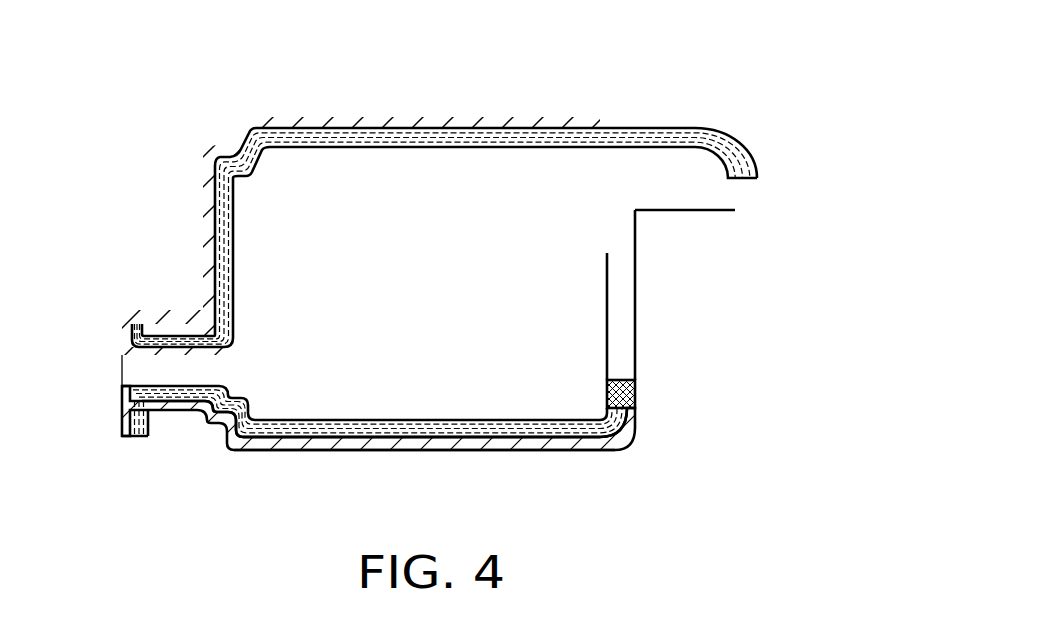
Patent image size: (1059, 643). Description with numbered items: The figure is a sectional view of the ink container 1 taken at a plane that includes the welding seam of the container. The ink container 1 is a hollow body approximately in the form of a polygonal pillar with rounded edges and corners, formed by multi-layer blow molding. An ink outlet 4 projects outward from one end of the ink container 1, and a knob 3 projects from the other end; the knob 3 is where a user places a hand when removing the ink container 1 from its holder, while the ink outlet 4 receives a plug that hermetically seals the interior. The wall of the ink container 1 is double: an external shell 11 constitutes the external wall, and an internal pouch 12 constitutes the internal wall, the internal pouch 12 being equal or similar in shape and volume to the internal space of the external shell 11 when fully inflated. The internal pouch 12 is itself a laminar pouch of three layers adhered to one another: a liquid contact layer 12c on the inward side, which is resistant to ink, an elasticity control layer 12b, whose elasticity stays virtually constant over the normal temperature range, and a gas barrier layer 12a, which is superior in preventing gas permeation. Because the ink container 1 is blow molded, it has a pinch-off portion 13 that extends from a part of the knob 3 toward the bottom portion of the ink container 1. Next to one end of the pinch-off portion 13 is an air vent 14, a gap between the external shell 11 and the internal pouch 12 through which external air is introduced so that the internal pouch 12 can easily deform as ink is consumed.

The ink container 1 is at (243, 72).
The knob 3 is at (738, 152).
The ink outlet 4 is at (130, 370).
The external shell 11 is at (497, 452).
The internal pouch 12 is at (653, 2).
The gas barrier layer 12a is at (538, 128).
The elasticity control layer 12b is at (553, 133).
The liquid contact layer 12c is at (569, 138).
The pinch-off portion 13 is at (703, 228).
The air vent 14 is at (637, 394).